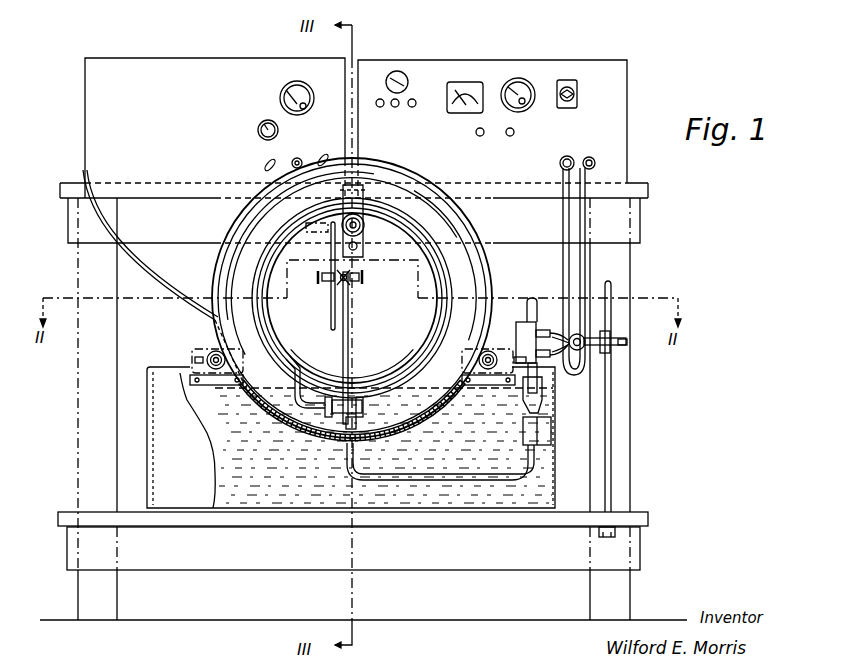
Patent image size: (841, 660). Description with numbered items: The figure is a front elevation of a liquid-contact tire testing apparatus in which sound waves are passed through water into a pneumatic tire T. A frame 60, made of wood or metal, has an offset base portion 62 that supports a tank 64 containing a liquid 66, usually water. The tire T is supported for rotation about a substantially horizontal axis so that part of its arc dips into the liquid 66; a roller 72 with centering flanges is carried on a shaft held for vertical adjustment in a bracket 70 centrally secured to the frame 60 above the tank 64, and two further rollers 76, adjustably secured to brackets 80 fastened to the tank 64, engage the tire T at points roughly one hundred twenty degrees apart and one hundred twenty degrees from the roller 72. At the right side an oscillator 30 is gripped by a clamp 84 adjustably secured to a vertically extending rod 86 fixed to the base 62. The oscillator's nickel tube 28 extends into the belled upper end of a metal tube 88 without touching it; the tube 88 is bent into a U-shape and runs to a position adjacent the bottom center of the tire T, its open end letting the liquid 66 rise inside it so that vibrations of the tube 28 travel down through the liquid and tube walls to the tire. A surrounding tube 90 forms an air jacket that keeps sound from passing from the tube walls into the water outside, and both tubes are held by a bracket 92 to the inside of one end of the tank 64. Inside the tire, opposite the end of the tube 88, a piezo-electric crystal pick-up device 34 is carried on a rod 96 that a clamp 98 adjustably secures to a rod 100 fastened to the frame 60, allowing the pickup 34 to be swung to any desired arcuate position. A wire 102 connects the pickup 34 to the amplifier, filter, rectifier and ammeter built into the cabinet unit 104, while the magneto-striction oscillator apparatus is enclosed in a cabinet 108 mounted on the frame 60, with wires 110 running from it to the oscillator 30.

The pneumatic tire T is at (217, 276).
The nickel tube 28 is at (534, 296).
The oscillator 30 is at (520, 322).
The piezo-electric crystal pick-up device 34 is at (355, 405).
The frame 60 is at (78, 372).
The offset base portion 62 is at (640, 515).
The tank 64 is at (182, 493).
The liquid 66 is at (270, 487).
The bracket 70 is at (363, 250).
The roller 72 is at (365, 226).
The rollers 76 is at (215, 352).
The brackets 80 is at (190, 355).
The clamp 84 is at (563, 330).
The vertically extending rod 86 is at (612, 412).
The metal tube 88 is at (540, 390).
The tube (air jacket) 90 is at (532, 478).
The bracket 92 is at (550, 440).
The rod 96 is at (348, 330).
The clamp 98 is at (356, 283).
The rod 100 is at (331, 312).
The wire 102 is at (182, 312).
The amplifier unit 104 is at (195, 66).
The cabinet 108 is at (497, 64).
The wires 110 is at (570, 230).